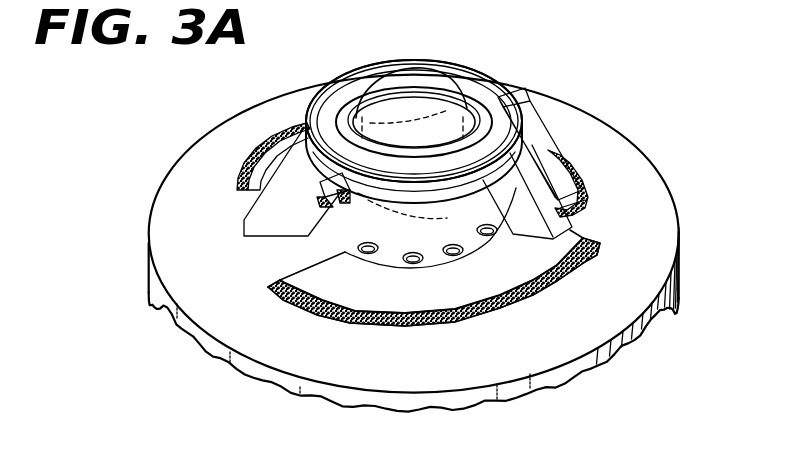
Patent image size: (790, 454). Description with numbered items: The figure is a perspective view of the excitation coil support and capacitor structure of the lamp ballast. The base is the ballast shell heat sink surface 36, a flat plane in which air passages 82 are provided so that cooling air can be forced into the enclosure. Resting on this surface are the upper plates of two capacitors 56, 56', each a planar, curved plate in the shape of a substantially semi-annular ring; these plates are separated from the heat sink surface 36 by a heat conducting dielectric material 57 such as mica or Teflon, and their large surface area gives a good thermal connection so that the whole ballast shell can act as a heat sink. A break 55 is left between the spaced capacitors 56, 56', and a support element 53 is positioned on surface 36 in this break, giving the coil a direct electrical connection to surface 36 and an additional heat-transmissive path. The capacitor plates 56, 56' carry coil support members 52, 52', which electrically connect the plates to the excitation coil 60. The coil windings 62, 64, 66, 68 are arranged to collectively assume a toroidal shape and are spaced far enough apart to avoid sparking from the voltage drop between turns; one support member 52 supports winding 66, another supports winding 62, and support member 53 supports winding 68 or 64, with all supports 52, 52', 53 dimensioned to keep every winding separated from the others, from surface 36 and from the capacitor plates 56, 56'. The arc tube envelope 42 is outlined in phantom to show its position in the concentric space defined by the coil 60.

The heat sink surface 36 is at (193, 188).
The arc tube envelope 42 is at (437, 203).
The coil support member 52 is at (526, 216).
The coil support member 52' is at (570, 138).
The support element 53 is at (273, 220).
The break 55 is at (578, 223).
The capacitor plate 56 is at (434, 300).
The capacitor plate 56' is at (239, 143).
The heat conducting dielectric material 57 is at (573, 266).
The excitation coil 60 is at (462, 55).
The coil winding 62 is at (323, 100).
The coil winding 64 is at (357, 98).
The coil winding 66 is at (365, 192).
The coil winding 68 is at (404, 94).
The air passages 82 is at (450, 248).